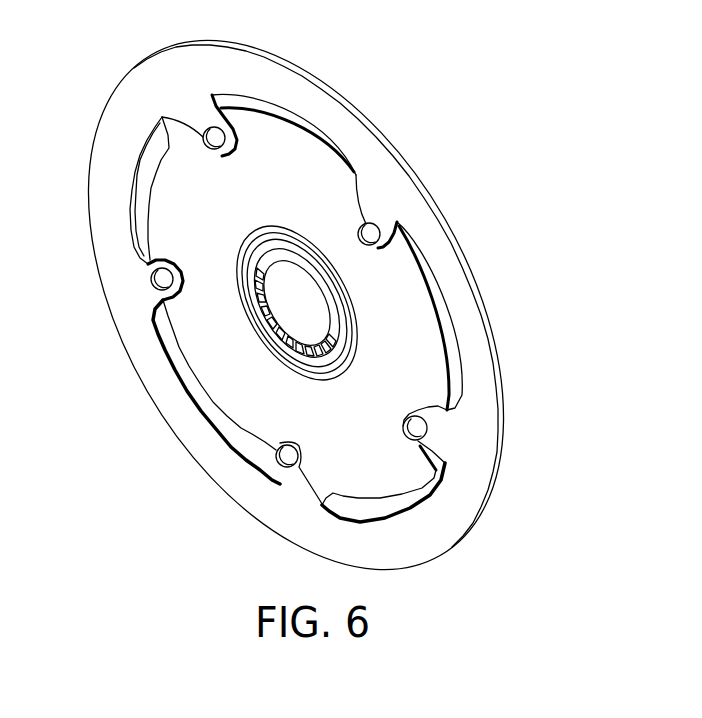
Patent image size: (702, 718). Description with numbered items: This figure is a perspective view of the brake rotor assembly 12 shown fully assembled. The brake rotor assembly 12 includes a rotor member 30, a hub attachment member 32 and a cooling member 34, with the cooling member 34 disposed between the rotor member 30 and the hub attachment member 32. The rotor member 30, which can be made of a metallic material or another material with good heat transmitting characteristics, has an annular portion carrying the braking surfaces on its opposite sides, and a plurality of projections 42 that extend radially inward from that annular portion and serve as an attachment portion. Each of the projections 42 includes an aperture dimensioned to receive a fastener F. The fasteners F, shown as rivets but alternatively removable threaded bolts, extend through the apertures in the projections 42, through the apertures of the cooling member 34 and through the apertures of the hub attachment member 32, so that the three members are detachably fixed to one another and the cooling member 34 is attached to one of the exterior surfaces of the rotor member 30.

The brake rotor assembly 12 is at (296, 320).
The rotor member 30 is at (453, 287).
The hub attachment member 32 is at (335, 318).
The cooling member 34 is at (423, 358).
The projections 42 is at (294, 302).
The fastener F is at (292, 452).